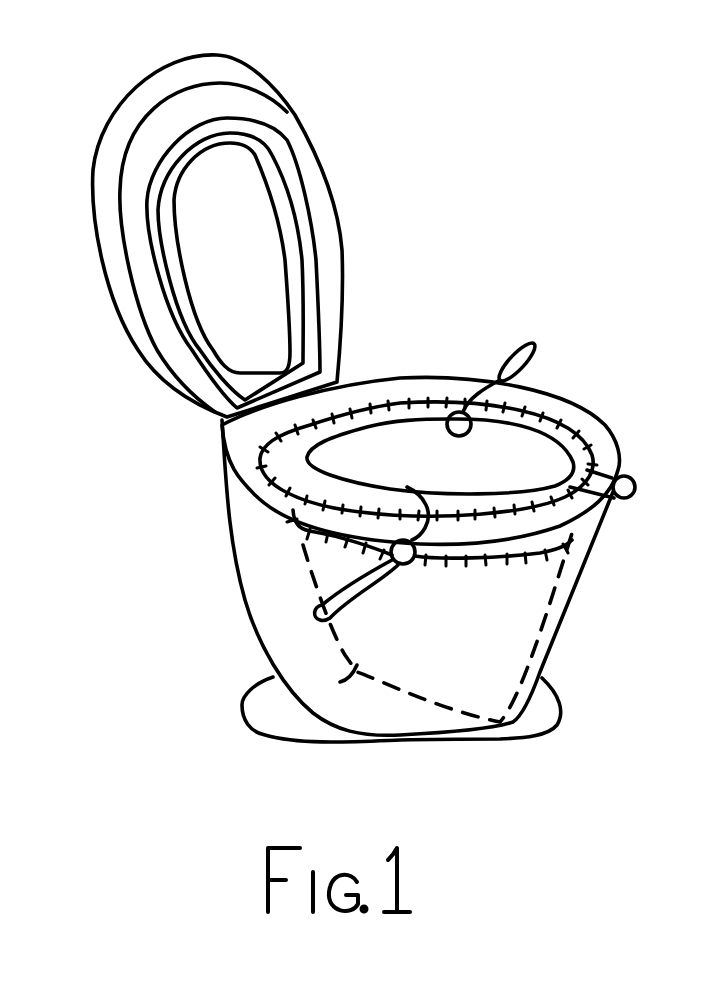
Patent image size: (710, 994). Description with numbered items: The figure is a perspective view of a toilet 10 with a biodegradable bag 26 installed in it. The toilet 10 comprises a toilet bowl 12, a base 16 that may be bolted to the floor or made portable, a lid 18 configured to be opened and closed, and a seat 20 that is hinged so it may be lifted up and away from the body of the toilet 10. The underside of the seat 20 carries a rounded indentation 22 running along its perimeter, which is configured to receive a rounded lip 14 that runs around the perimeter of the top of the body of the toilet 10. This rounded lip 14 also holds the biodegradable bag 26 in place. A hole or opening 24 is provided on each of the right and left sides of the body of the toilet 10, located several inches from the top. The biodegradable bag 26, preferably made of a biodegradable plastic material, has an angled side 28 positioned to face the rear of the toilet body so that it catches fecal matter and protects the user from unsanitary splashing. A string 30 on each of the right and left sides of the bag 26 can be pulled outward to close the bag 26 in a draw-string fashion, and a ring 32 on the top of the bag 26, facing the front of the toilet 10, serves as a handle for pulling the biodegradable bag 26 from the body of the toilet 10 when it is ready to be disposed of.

The toilet 10 is at (192, 507).
The toilet bowl 12 is at (550, 640).
The rounded lip 14 is at (386, 400).
The base 16 is at (262, 712).
The lid 18 is at (140, 105).
The seat 20 is at (305, 152).
The rounded indentation 22 is at (312, 296).
The hole or opening 24 is at (452, 412).
The biodegradable bag 26 is at (526, 601).
The angled side 28 is at (340, 682).
The string 30 is at (530, 342).
The ring 32 is at (628, 475).